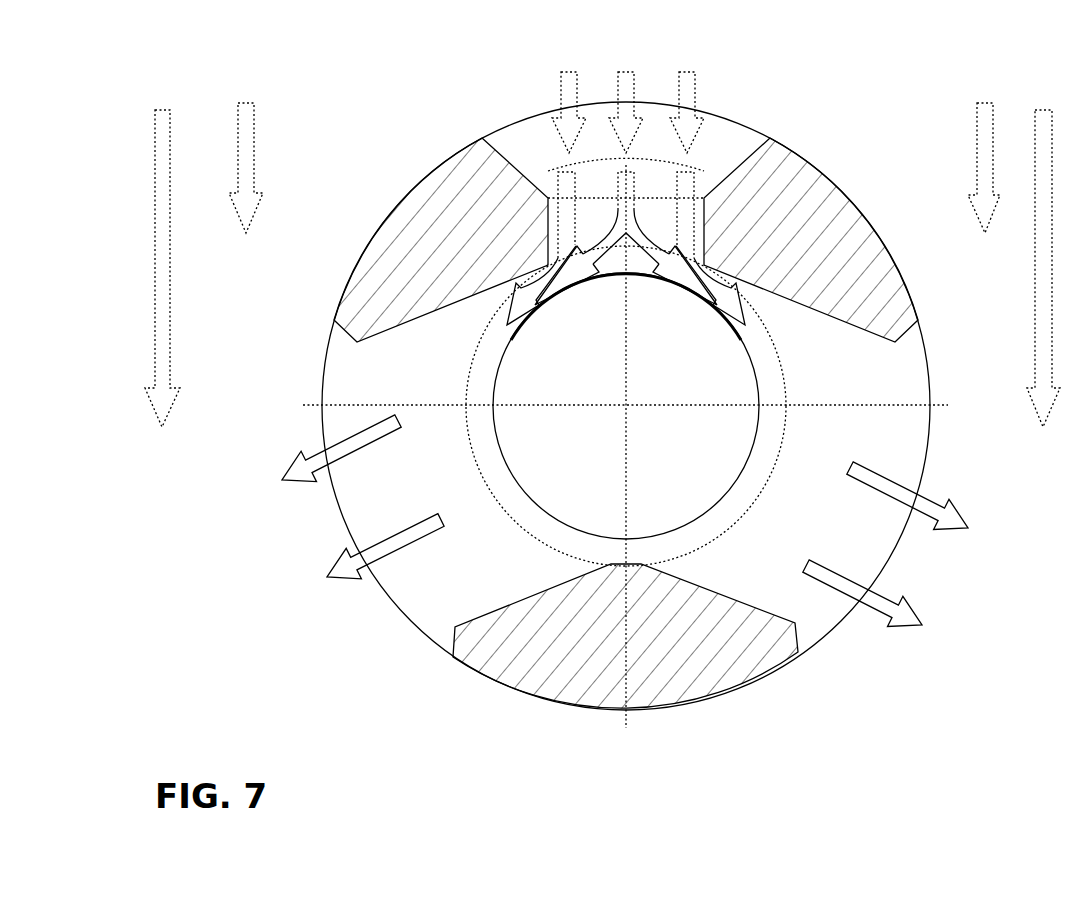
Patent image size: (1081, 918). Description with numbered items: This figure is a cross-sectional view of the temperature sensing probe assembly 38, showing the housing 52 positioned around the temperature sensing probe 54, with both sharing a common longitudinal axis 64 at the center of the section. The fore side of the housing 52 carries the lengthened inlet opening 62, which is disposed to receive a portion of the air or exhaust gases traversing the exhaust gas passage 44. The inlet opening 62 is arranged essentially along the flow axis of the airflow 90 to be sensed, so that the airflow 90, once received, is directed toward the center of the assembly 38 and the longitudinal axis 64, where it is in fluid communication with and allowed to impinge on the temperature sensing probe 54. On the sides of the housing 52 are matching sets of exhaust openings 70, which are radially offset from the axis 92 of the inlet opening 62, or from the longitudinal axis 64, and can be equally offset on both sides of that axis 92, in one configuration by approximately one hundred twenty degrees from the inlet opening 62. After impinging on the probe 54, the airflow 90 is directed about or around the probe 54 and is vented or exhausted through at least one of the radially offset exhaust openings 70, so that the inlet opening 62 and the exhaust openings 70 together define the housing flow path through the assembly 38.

The temperature sensing probe assembly 38 is at (364, 102).
The exhaust gas passage 44 is at (955, 774).
The housing 52 is at (823, 215).
The temperature sensing probe 54 is at (663, 475).
The inlet opening 62 is at (737, 131).
The longitudinal axis 64 is at (629, 409).
The exhaust openings 70 is at (316, 316).
The airflow 90 is at (245, 133).
The axis of the inlet opening 92 is at (618, 620).